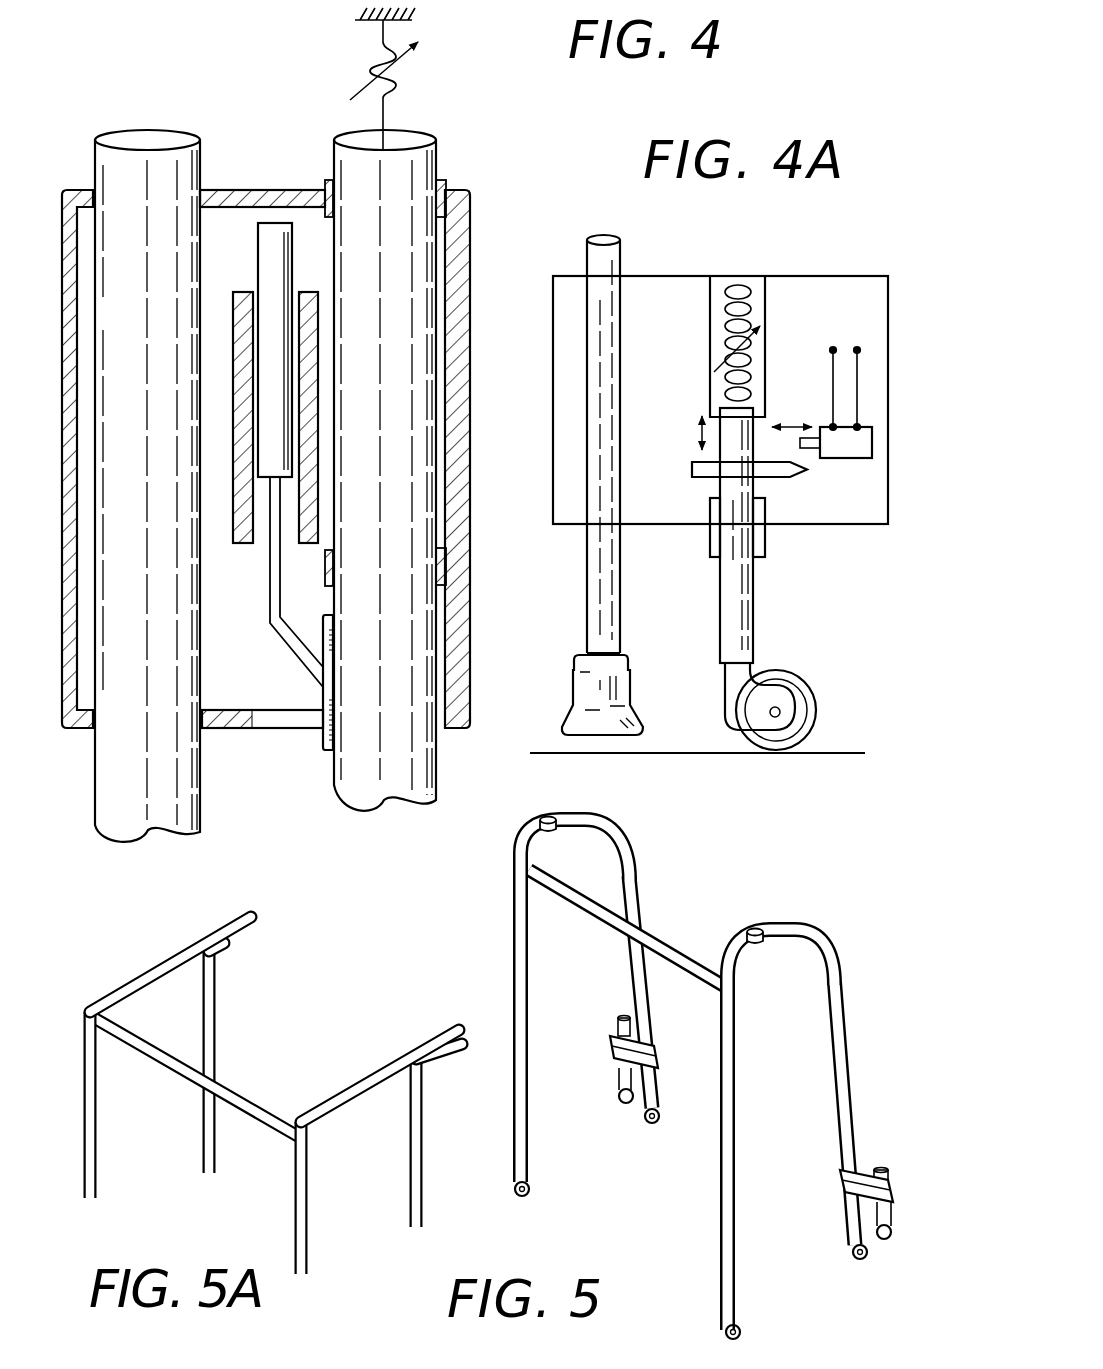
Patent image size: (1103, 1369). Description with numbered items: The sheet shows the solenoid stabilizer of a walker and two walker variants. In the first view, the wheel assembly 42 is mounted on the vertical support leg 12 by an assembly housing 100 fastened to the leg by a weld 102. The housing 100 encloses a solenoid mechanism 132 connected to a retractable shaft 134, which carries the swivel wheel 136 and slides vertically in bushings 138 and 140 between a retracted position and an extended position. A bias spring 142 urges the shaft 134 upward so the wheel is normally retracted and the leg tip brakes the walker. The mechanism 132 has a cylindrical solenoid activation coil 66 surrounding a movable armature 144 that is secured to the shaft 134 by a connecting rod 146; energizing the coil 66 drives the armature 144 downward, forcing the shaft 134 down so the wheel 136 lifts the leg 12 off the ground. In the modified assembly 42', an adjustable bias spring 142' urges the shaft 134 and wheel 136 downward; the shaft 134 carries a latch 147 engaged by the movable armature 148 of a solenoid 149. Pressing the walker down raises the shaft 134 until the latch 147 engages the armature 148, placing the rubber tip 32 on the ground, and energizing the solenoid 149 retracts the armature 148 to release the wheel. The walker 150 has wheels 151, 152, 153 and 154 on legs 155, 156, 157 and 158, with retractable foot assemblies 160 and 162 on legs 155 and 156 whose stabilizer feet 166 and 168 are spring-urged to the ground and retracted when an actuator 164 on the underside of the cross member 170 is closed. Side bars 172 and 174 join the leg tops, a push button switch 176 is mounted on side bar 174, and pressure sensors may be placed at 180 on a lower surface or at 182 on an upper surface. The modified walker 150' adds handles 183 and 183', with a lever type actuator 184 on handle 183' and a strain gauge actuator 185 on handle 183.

In FIG. 4, the vertical support leg 12 is at (187, 792).
In FIG. 4A, the vertical support leg 12 is at (613, 259).
In FIG. 4A, the rubber tip 32 is at (605, 726).
In FIG. 4, the wheel assembly 42 is at (492, 459).
In FIG. 4A, the alternative solenoid brake release assembly 42' is at (704, 484).
In FIG. 4, the solenoid activation coil 66 is at (312, 291).
In FIG. 4, the assembly housing 100 is at (61, 172).
In FIG. 4A, the assembly housing 100 is at (790, 276).
In FIG. 4, the weld 102 is at (213, 186).
In FIG. 4, the solenoid mechanism 132 is at (224, 266).
In FIG. 4, the retractable shaft 134 is at (426, 166).
In FIG. 4A, the retractable shaft 134 is at (741, 628).
In FIG. 4A, the swivel wheel 136 is at (815, 732).
In FIG. 4, the bushing 138 is at (446, 184).
In FIG. 4, the bushing 140 is at (447, 591).
In FIG. 4A, the bushing 140 is at (710, 540).
In FIG. 4, the bias spring 142 is at (377, 319).
In FIG. 4A, the adjustable bias spring 142' is at (782, 346).
In FIG. 4, the movable armature 144 is at (272, 222).
In FIG. 4, the connecting rod 146 is at (294, 653).
In FIG. 4A, the latch 147 is at (780, 478).
In FIG. 4A, the movable armature 148 is at (820, 448).
In FIG. 4A, the solenoid 149 is at (855, 459).
In FIG. 5, the walker 150 is at (779, 847).
In FIG. 5A, the modified walker 150' is at (356, 901).
In FIG. 5, the wheel 151 is at (645, 1133).
In FIG. 5, the wheel 152 is at (862, 1259).
In FIG. 5, the wheel 153 is at (726, 1312).
In FIG. 5, the wheel 154 is at (527, 1196).
In FIG. 5, the vertical leg 155 is at (633, 953).
In FIG. 5A, the vertical leg 155 is at (217, 1143).
In FIG. 5, the vertical leg 156 is at (844, 1047).
In FIG. 5A, the vertical leg 156 is at (411, 1170).
In FIG. 5, the vertical leg 157 is at (722, 1190).
In FIG. 5A, the vertical leg 157 is at (300, 1197).
In FIG. 5, the vertical leg 158 is at (514, 982).
In FIG. 5A, the vertical leg 158 is at (90, 1124).
In FIG. 5, the retractable foot assembly 160 is at (669, 1072).
In FIG. 5, the retractable foot assembly 162 is at (879, 1162).
In FIG. 5, the actuator 164 is at (652, 948).
In FIG. 5, the retractable stabilizer foot 166 is at (615, 1073).
In FIG. 5, the retractable stabilizer foot 168 is at (893, 1219).
In FIG. 5, the cross member 170 is at (651, 943).
In FIG. 5, the side bar 172 is at (561, 816).
In FIG. 5A, the side bar 172 is at (102, 1011).
In FIG. 5, the side bar 174 is at (734, 944).
In FIG. 5A, the side bar 174 is at (332, 1098).
In FIG. 5, the push button switch 176 is at (768, 917).
In FIG. 5, the pressure sensor location 180 is at (515, 853).
In FIG. 5, the pressure sensor location 182 is at (541, 820).
In FIG. 5A, the handle 183 is at (170, 947).
In FIG. 5A, the handle 183' is at (419, 997).
In FIG. 5A, the lever type actuator 184 is at (454, 1052).
In FIG. 5A, the strain gauge actuator 185 is at (226, 962).